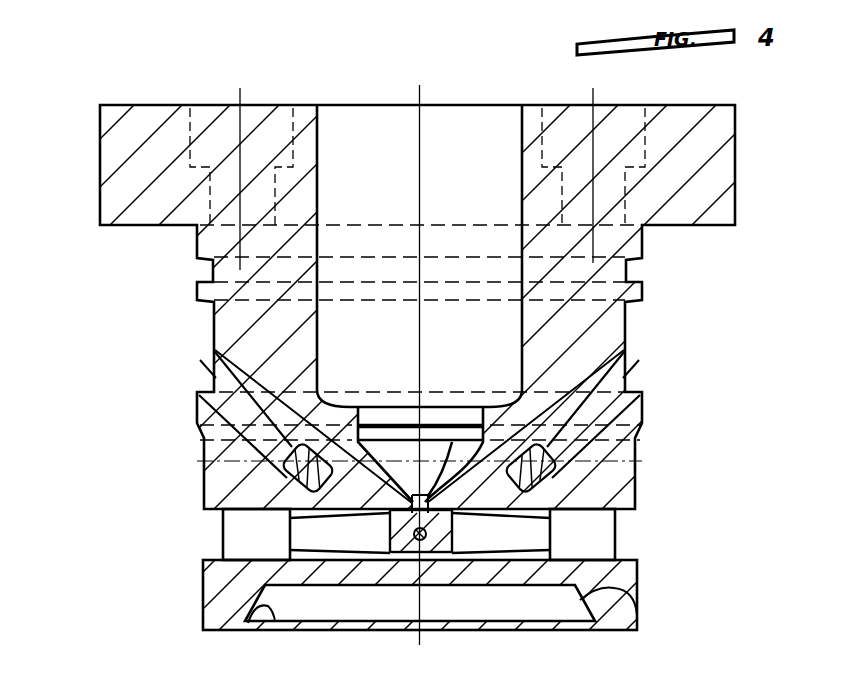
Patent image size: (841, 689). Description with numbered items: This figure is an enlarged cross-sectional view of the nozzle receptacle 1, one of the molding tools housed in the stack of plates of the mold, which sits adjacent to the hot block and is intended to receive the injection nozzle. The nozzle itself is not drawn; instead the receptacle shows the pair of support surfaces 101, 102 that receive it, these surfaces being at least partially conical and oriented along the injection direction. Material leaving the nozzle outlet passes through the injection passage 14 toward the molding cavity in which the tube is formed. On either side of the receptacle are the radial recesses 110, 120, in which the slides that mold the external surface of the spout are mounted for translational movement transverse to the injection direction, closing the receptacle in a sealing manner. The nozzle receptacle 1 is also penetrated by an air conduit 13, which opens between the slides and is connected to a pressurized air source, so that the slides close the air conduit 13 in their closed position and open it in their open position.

The nozzle receptacle 1 is at (178, 319).
The air conduit 13 is at (427, 545).
The injection passage 14 is at (404, 479).
The support surface 101 is at (274, 620).
The support surface 102 is at (430, 496).
The radial recess 110 is at (245, 538).
The radial recess 120 is at (597, 530).